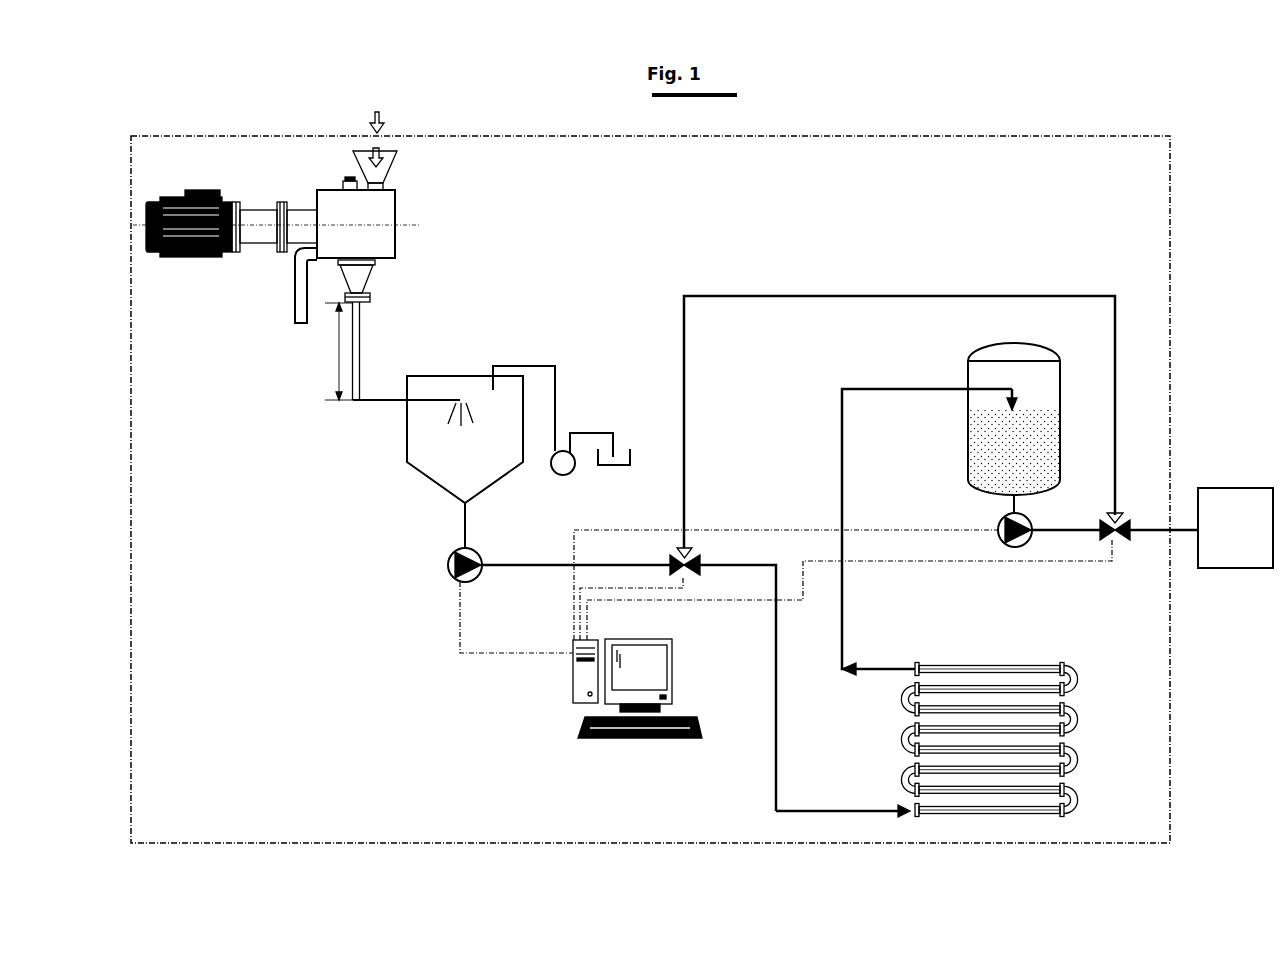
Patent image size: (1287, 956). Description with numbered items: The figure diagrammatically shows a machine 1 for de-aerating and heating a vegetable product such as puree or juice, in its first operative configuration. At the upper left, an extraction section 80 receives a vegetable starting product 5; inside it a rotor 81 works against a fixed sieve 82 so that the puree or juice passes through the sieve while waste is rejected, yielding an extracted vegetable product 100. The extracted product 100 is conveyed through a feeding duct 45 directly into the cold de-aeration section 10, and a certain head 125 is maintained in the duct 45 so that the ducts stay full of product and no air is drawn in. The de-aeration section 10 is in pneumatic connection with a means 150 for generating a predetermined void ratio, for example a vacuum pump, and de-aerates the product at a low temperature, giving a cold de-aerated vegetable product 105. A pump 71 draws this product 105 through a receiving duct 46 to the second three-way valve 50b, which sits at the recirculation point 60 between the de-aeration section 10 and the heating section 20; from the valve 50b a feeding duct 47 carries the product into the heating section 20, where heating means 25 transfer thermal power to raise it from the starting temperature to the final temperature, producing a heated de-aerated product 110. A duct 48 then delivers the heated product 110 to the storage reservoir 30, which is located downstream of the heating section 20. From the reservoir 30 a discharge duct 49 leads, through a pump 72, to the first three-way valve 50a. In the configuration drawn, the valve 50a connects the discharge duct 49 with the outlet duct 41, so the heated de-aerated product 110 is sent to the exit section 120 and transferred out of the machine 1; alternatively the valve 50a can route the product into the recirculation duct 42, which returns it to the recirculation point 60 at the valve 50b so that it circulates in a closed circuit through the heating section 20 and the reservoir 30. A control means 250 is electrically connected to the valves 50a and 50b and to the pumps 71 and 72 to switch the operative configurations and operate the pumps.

The machine 1 is at (1194, 184).
The vegetable starting product 5 is at (382, 113).
The cold de-aeration section 10 is at (388, 437).
The heating section 20 is at (1025, 711).
The heating means 25 is at (977, 661).
The storage reservoir 30 is at (956, 360).
The outlet duct 41 is at (1148, 527).
The recirculation duct 42 is at (1113, 417).
The feeding duct 45 is at (361, 340).
The receiving duct 46 is at (547, 569).
The feeding duct 47 is at (775, 713).
The duct 48 is at (840, 475).
The discharge duct 49 is at (1056, 529).
The first three-way valve 50a is at (1126, 549).
The second three-way valve 50b is at (673, 542).
The recirculation point 60 is at (716, 562).
The pump 71 is at (446, 551).
The pump 72 is at (993, 517).
The extraction section 80 is at (230, 278).
The rotor 81 is at (372, 273).
The fixed sieve 82 is at (296, 266).
The extracted vegetable product 100 is at (371, 365).
The cold-extracted and de-aerated vegetable product 105 is at (471, 513).
The heated de-aerated product 110 is at (981, 428).
The exit section 120 is at (1234, 578).
The head 125 is at (336, 349).
The means for generating a predetermined void ratio 150 is at (606, 416).
The control means 250 is at (556, 695).